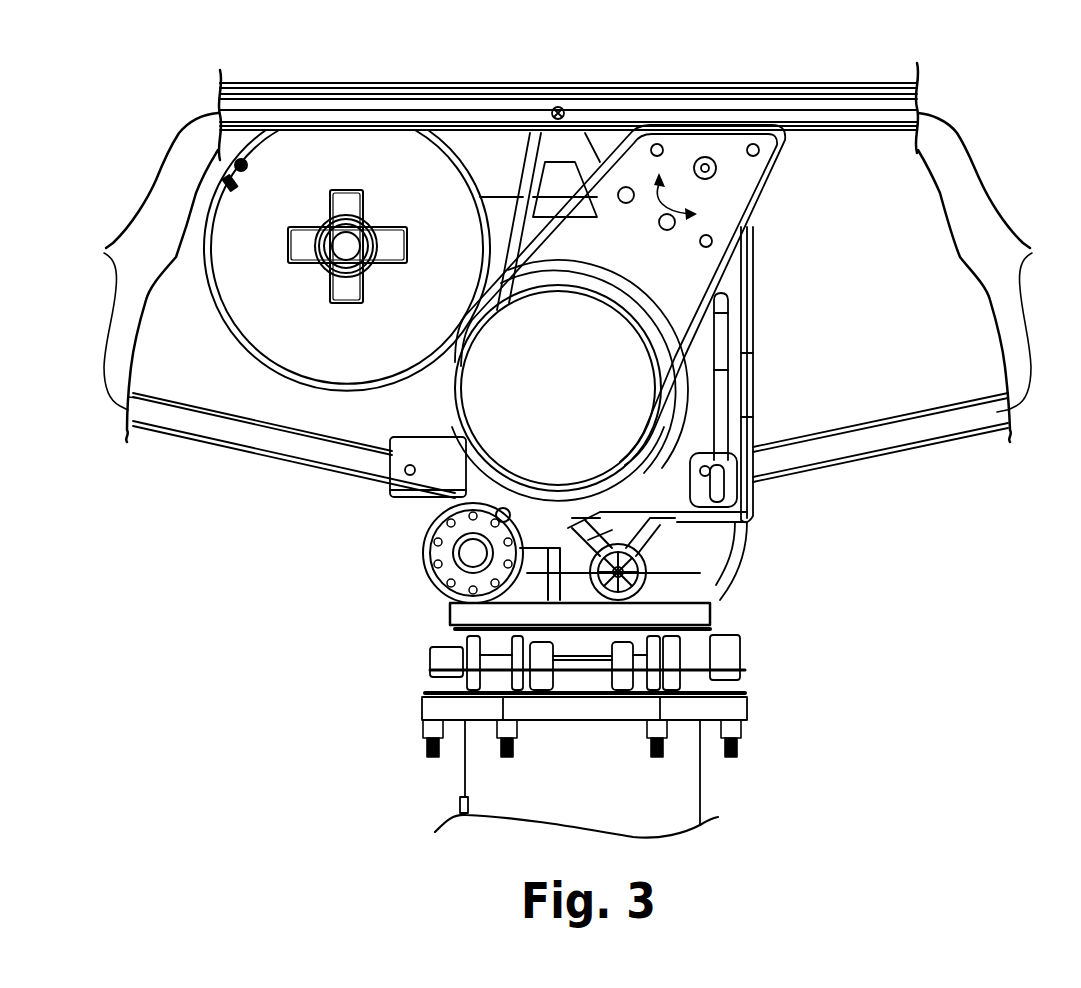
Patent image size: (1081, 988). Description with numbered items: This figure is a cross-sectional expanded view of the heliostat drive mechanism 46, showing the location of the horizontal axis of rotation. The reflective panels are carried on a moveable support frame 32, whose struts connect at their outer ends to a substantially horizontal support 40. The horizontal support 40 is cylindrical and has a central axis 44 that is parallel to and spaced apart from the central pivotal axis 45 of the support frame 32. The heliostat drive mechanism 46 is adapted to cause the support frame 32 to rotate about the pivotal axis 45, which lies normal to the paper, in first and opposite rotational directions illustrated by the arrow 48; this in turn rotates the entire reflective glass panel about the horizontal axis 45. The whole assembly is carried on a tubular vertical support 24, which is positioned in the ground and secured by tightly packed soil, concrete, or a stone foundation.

The vertical support 24 is at (664, 787).
The moveable support frame 32 is at (121, 251).
The horizontal support 40 is at (633, 453).
The central axis 44 is at (560, 387).
The pivotal axis 45 is at (706, 168).
The heliostat drive mechanism 46 is at (764, 391).
The arrow 48 is at (676, 191).